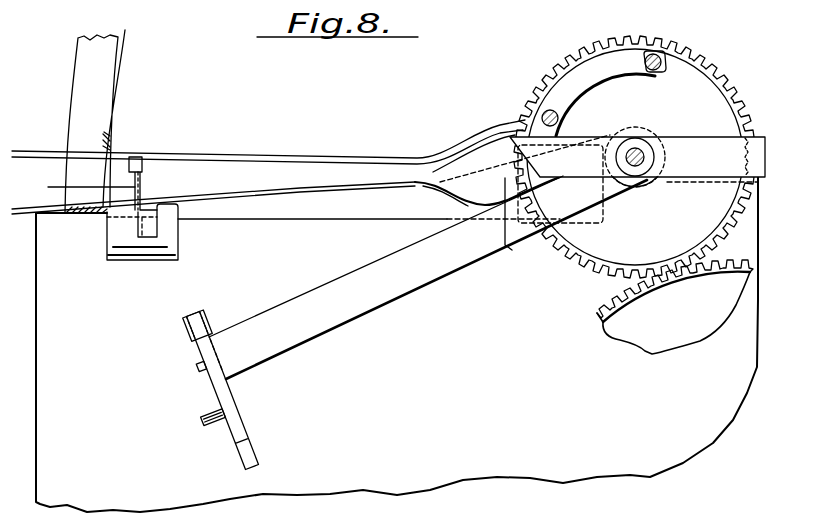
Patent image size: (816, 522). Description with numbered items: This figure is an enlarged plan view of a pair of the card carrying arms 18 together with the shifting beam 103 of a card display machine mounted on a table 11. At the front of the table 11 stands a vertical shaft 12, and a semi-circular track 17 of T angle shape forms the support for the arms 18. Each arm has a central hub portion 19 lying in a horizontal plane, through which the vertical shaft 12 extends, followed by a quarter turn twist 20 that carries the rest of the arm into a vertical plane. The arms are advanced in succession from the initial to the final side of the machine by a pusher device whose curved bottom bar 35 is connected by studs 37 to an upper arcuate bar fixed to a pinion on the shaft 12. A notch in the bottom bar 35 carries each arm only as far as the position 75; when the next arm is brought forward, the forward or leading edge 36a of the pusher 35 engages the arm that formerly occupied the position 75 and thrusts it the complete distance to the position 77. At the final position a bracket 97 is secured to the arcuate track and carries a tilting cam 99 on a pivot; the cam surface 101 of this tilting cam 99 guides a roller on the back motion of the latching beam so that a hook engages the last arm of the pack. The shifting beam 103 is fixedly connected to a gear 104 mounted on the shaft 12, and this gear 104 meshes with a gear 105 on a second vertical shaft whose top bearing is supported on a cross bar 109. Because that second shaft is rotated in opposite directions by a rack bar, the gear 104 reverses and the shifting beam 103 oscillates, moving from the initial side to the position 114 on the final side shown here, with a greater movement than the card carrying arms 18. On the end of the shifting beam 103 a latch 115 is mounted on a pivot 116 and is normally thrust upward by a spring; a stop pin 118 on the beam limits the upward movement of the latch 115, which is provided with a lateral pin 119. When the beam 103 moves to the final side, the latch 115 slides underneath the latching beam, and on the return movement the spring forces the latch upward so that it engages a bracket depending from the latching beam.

The table 11 is at (646, 470).
The vertical shaft 12 is at (645, 151).
The semi-circular track 17 is at (112, 97).
The card carrying arms 18 is at (710, 124).
The hub portion 19 is at (610, 148).
The quarter turn twist 20 is at (394, 201).
The curved bottom bar 35 is at (580, 76).
The forward or leading edge 36a is at (466, 209).
The studs 37 is at (559, 118).
The position 75 is at (223, 143).
The position 77 is at (277, 193).
The bracket 97 is at (118, 228).
The tilting cam 99 is at (79, 184).
The cam surface 101 is at (120, 256).
The shifting beam 103 is at (382, 283).
The gear 104 is at (633, 248).
The gear 105 is at (668, 337).
The cross bar 109 is at (143, 171).
The position 114 is at (317, 342).
The latch 115 is at (242, 422).
The pivot 116 is at (183, 332).
The stop pin 118 is at (197, 364).
The lateral pin 119 is at (200, 421).